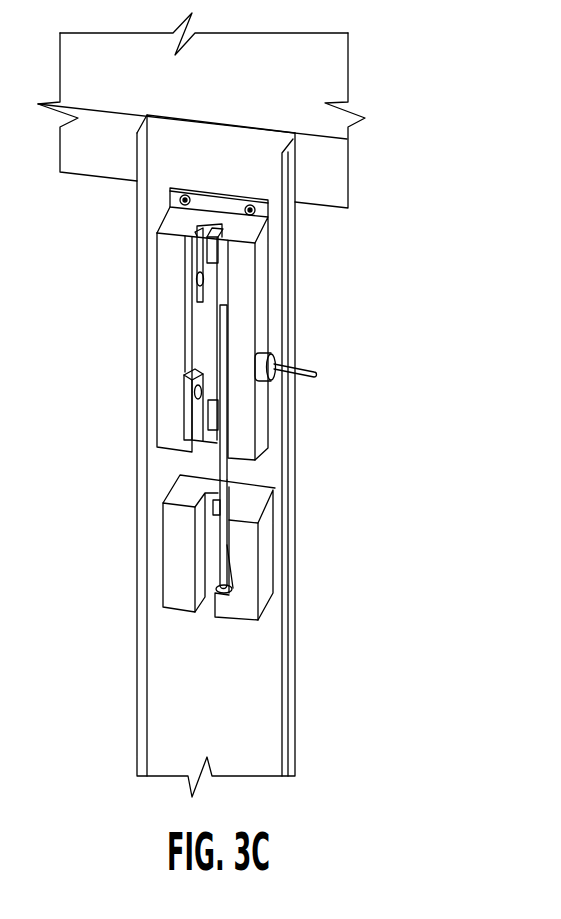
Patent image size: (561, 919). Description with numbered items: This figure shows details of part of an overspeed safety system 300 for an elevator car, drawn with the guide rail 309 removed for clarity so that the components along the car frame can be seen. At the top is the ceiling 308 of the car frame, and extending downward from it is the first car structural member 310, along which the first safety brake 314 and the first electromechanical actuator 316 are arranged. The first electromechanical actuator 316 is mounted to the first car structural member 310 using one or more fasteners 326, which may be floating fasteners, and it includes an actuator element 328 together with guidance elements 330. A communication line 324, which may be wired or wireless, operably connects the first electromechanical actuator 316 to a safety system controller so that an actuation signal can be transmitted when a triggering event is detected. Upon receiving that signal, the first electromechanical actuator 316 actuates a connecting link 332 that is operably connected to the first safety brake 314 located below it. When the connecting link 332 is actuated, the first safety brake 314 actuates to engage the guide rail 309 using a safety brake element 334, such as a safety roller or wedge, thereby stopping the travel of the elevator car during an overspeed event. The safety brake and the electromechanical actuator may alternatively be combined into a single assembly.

The overspeed safety system 300 is at (132, 408).
The ceiling 308 is at (338, 168).
The guide rail 309 is at (172, 721).
The first car structural member 310 is at (277, 722).
The first safety brake 314 is at (263, 560).
The first electromechanical actuator 316 is at (262, 318).
The communication line 324 is at (316, 377).
The fasteners 326 is at (262, 206).
The actuator element 328 is at (221, 365).
The guidance elements 330 is at (202, 255).
The connecting link 332 is at (228, 480).
The safety brake element 334 is at (231, 593).